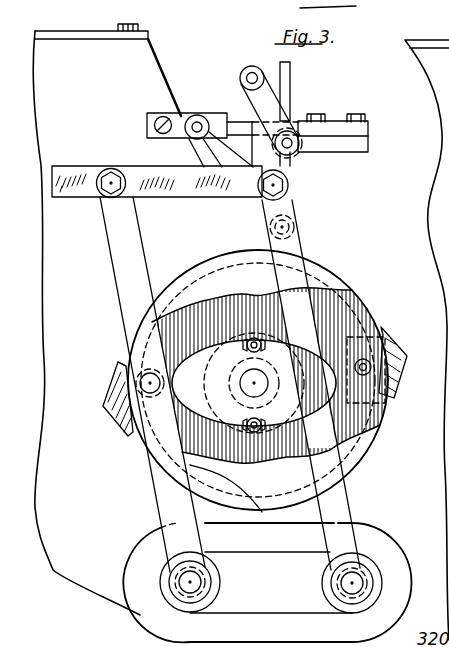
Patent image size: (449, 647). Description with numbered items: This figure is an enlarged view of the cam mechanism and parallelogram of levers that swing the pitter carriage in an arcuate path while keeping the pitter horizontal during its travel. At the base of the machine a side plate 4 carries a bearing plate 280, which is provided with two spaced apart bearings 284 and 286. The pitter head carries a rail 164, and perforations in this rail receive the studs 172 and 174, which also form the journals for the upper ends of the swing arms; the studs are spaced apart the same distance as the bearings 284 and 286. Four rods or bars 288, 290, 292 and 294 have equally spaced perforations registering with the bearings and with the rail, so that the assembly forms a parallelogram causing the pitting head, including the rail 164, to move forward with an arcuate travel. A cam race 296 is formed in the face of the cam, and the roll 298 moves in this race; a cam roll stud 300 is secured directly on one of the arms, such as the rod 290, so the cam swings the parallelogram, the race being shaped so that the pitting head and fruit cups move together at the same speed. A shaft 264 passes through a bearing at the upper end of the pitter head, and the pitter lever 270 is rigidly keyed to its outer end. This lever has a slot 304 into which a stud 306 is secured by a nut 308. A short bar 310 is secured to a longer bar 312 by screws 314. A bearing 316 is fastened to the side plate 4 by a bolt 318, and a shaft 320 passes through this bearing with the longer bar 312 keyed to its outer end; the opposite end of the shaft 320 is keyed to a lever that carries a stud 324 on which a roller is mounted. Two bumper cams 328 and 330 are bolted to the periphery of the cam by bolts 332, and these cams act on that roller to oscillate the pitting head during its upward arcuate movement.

The side plate 4 is at (146, 52).
The rail 164 is at (78, 193).
The stud 172 is at (290, 192).
The stud 174 is at (112, 168).
The shaft 264 is at (251, 68).
The pitter lever 270 is at (267, 100).
The bearing plate 280 is at (150, 568).
The bearing 284 is at (180, 598).
The bearing 286 is at (338, 604).
The rod 288 is at (125, 229).
The rod 290 is at (132, 312).
The rod 292 is at (337, 497).
The rod 294 is at (295, 298).
The cam race 296 is at (370, 432).
The roll 298 is at (150, 405).
The cam roll stud 300 is at (147, 380).
The slot 304 is at (299, 152).
The stud 306 is at (292, 106).
The nut 308 is at (137, 393).
The short bar 310 is at (358, 143).
The longer bar 312 is at (333, 121).
The screws 314 is at (364, 119).
The bearing 316 is at (186, 100).
The bolt 318 is at (160, 118).
The shaft 320 is at (201, 115).
The stud 324 is at (296, 226).
The bumper cam 328 is at (382, 325).
The bumper cam 330 is at (110, 370).
The bolts 332 is at (407, 352).